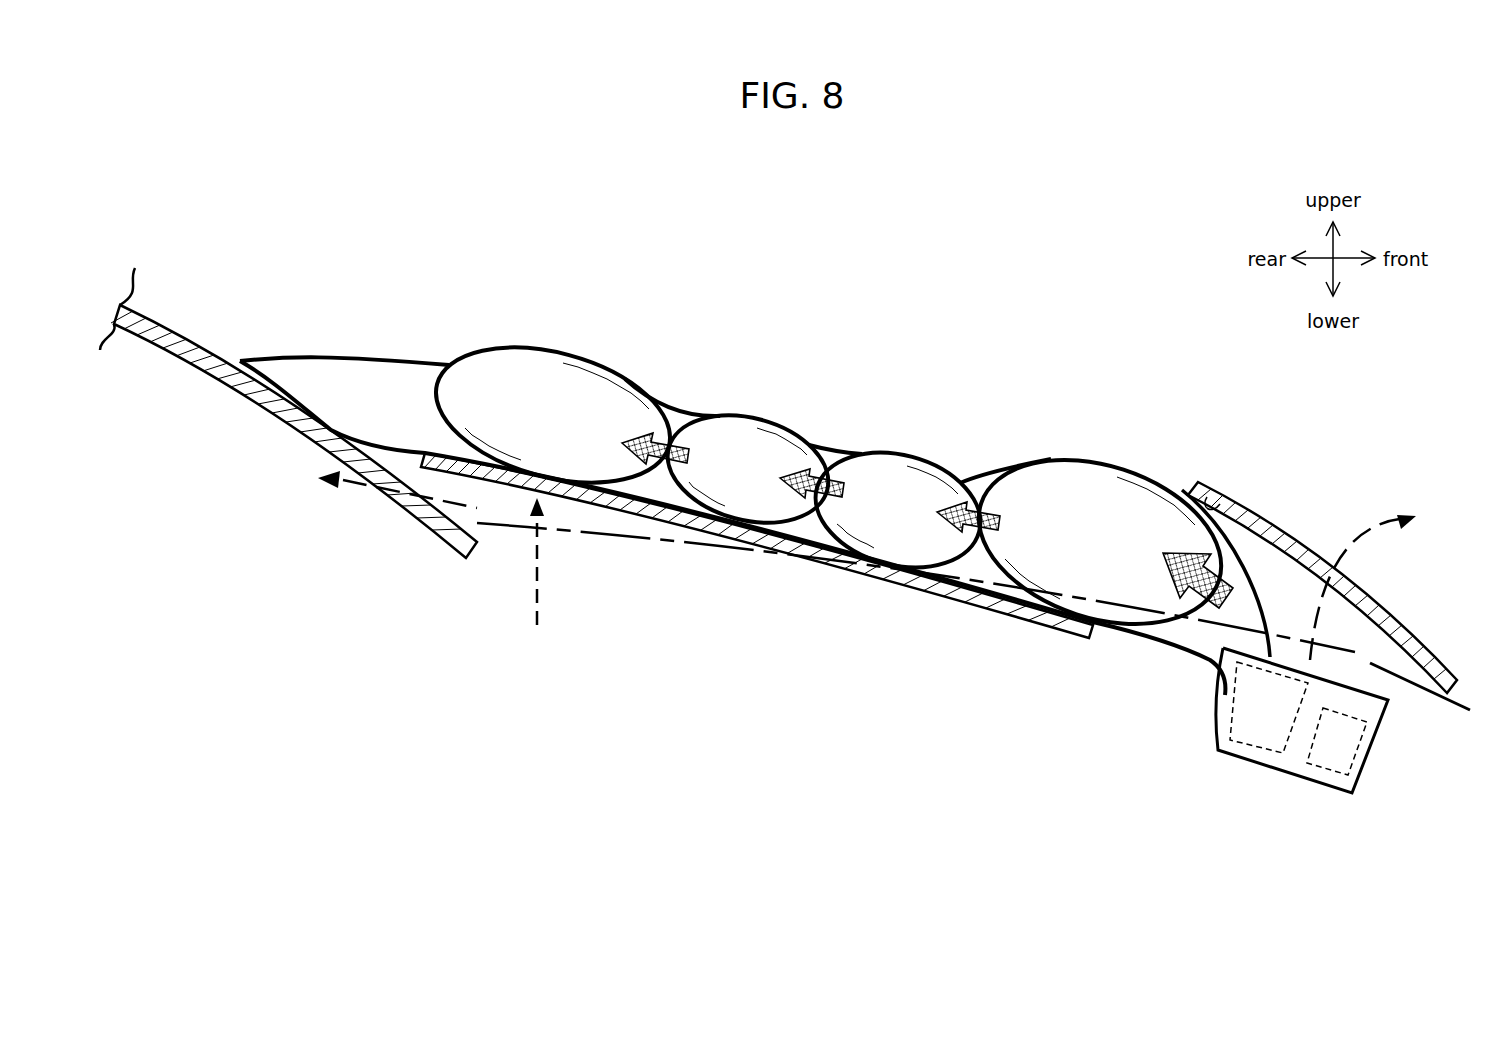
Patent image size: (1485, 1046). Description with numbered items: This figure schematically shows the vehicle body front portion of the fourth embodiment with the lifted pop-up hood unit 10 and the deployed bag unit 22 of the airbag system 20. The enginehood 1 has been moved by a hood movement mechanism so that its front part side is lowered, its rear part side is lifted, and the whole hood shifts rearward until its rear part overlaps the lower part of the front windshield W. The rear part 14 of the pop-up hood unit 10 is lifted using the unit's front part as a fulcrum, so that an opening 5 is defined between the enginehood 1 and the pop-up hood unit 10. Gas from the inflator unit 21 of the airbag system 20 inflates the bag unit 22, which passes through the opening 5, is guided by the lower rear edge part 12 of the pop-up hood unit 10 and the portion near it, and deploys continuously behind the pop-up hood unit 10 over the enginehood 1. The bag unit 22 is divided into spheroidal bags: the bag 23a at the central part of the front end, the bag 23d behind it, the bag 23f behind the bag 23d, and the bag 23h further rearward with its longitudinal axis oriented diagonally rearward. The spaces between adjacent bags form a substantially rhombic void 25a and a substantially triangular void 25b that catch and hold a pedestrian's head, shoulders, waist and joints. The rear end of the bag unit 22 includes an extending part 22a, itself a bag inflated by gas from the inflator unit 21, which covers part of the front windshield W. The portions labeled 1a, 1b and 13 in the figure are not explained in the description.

The front windshield W is at (197, 350).
The enginehood 1 is at (862, 600).
The front end of instrument panel 1a is at (1073, 636).
The rear portion of instrument panel 1b is at (432, 470).
The opening 5 is at (1186, 480).
The pop-up hood unit 10 is at (1323, 532).
The lower rear edge part 12 is at (1210, 503).
The front end of lid 13 is at (1448, 672).
The rear part 14 is at (1200, 490).
The airbag system 20 is at (1383, 752).
The inflator unit 21 is at (1325, 770).
The bag unit 22 is at (774, 543).
The extending part 22a is at (362, 360).
The bag 23h is at (553, 353).
The bag 23f is at (750, 420).
The bag 23d is at (905, 456).
The bag 23a is at (1087, 460).
The void 25a is at (675, 416).
The void 25b is at (975, 480).